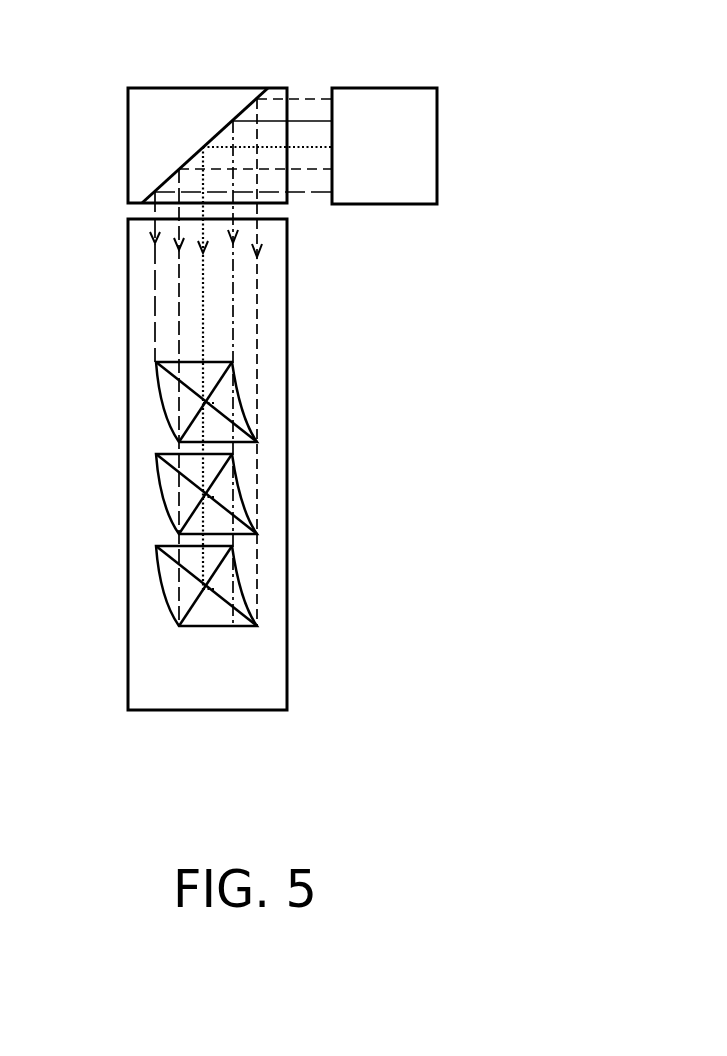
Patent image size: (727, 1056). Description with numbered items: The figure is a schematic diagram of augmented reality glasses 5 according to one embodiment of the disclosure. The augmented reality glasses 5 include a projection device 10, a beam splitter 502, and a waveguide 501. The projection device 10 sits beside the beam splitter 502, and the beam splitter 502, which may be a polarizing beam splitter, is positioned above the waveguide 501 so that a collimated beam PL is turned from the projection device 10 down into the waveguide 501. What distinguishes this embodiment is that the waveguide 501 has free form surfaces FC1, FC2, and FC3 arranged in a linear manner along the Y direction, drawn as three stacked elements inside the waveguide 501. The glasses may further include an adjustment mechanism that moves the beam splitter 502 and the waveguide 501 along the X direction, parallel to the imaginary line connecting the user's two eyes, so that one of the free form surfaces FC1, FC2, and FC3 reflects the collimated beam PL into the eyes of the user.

The beam splitter 502 is at (128, 148).
The projection device 10 is at (416, 88).
The collimated beam PL is at (304, 97).
The waveguide 501 is at (287, 460).
The free form surface FC1 is at (160, 408).
The free form surface FC2 is at (161, 501).
The free form surface FC3 is at (163, 593).
The augmented reality glasses 5 is at (511, 797).